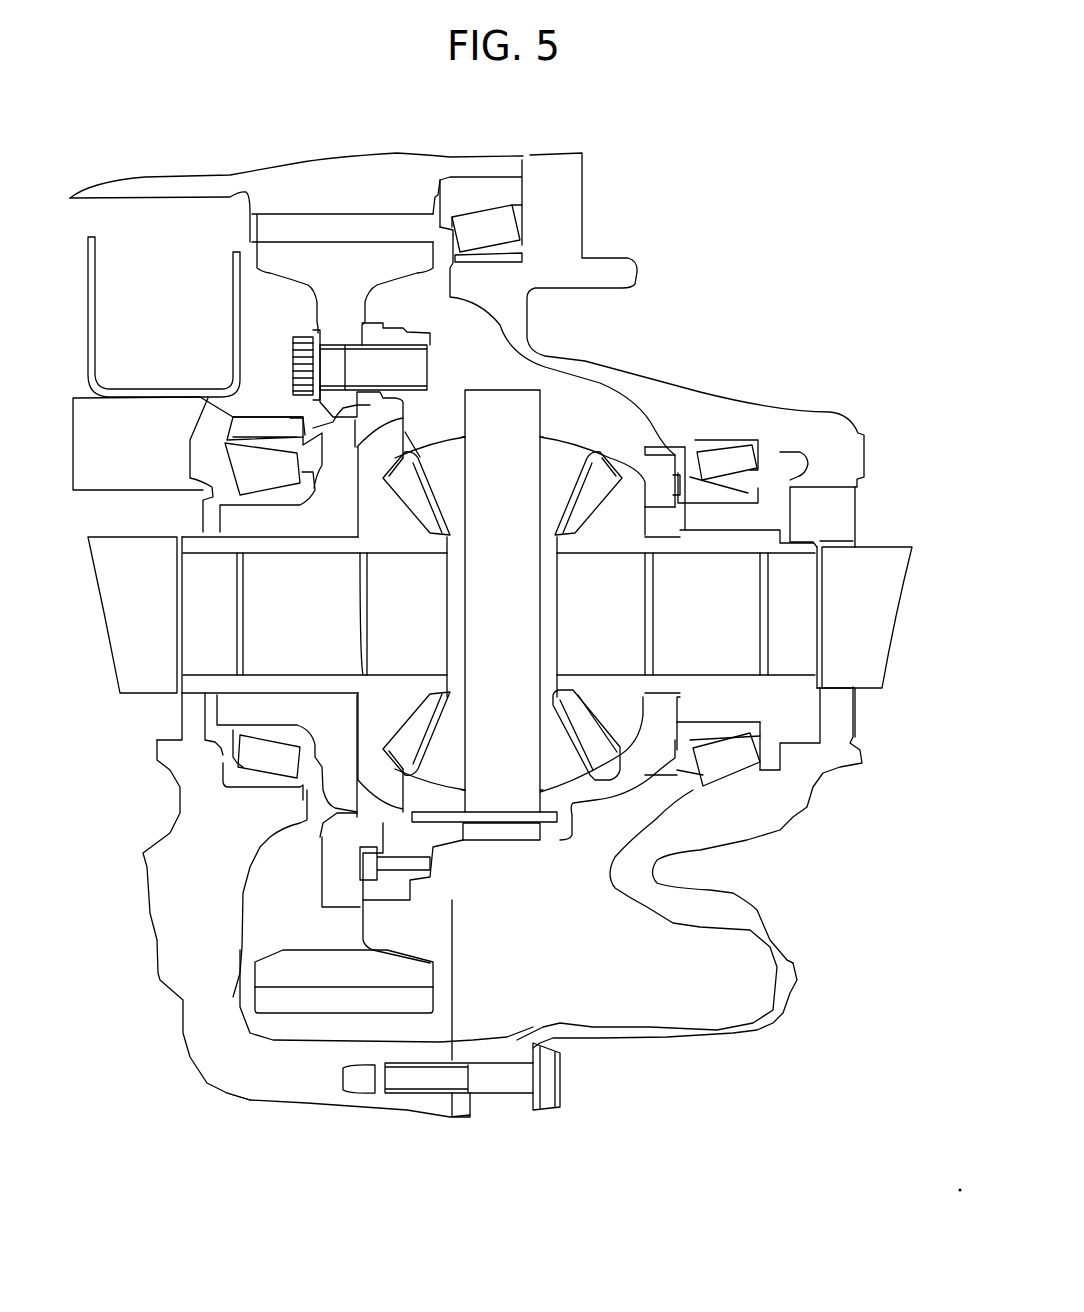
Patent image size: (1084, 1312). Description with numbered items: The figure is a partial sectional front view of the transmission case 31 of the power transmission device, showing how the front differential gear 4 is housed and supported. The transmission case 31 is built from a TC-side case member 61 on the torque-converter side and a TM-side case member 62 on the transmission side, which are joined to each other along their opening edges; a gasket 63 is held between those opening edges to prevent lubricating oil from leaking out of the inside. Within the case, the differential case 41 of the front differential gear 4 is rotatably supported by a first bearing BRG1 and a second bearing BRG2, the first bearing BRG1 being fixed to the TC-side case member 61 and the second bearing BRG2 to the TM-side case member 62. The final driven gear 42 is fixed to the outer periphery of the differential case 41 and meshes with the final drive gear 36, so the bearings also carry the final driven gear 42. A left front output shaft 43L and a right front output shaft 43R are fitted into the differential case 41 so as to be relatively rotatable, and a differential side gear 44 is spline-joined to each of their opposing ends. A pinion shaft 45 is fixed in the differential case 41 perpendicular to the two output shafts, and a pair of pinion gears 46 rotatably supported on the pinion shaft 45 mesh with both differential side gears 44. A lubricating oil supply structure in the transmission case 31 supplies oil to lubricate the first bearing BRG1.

The final drive gear 36 is at (357, 163).
The front differential gear 4 is at (647, 437).
The differential case 41 is at (560, 453).
The final driven gear 42 is at (265, 972).
The left front output shaft 43L is at (117, 630).
The right front output shaft 43R is at (888, 633).
The differential side gear 44 is at (635, 518).
The pinion shaft 45 is at (517, 400).
The pinion gear 46 is at (600, 447).
The transmission case 31 is at (496, 1128).
The TC-side case member 61 is at (722, 1030).
The TM-side case member 62 is at (258, 1095).
The gasket 63 is at (458, 965).
The first bearing BRG1 is at (747, 448).
The second bearing BRG2 is at (232, 453).